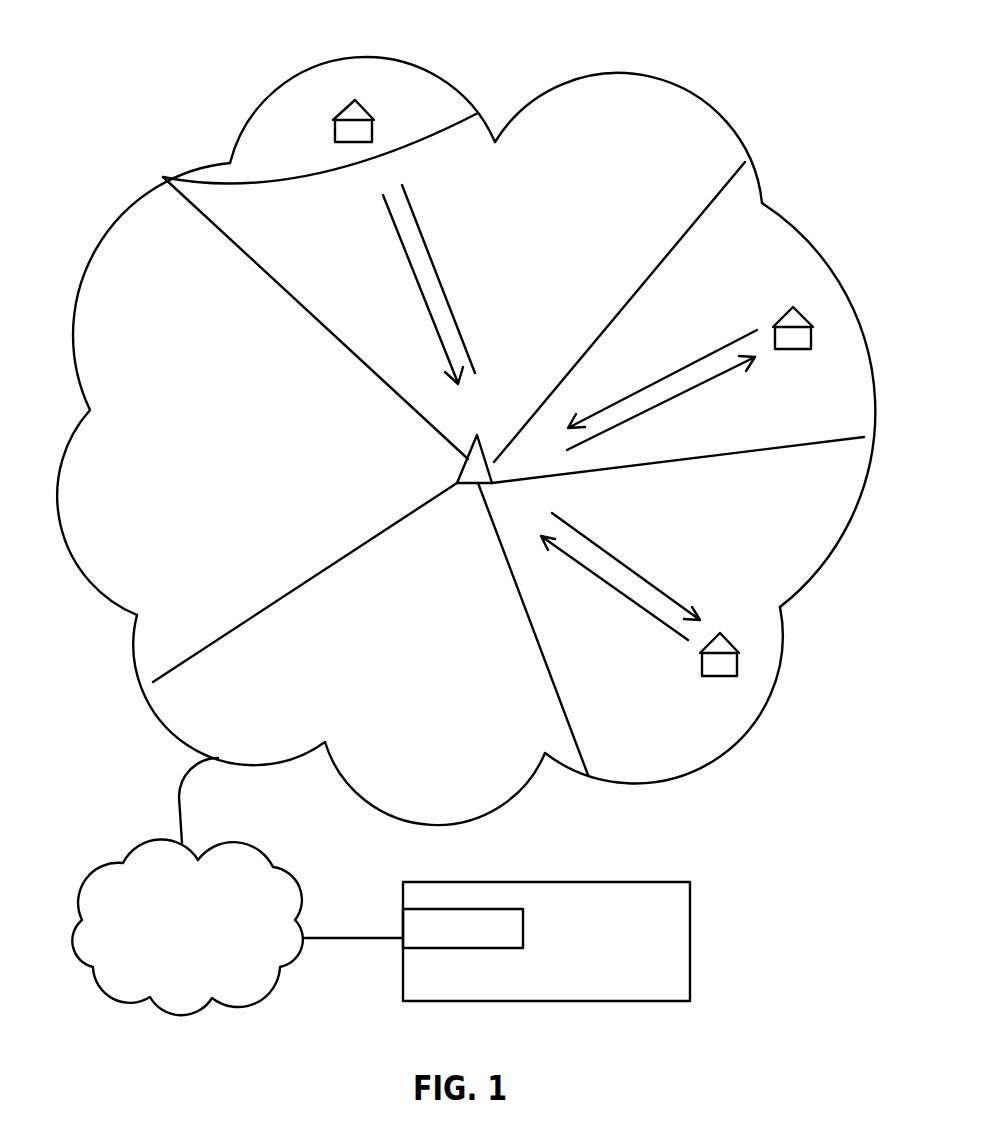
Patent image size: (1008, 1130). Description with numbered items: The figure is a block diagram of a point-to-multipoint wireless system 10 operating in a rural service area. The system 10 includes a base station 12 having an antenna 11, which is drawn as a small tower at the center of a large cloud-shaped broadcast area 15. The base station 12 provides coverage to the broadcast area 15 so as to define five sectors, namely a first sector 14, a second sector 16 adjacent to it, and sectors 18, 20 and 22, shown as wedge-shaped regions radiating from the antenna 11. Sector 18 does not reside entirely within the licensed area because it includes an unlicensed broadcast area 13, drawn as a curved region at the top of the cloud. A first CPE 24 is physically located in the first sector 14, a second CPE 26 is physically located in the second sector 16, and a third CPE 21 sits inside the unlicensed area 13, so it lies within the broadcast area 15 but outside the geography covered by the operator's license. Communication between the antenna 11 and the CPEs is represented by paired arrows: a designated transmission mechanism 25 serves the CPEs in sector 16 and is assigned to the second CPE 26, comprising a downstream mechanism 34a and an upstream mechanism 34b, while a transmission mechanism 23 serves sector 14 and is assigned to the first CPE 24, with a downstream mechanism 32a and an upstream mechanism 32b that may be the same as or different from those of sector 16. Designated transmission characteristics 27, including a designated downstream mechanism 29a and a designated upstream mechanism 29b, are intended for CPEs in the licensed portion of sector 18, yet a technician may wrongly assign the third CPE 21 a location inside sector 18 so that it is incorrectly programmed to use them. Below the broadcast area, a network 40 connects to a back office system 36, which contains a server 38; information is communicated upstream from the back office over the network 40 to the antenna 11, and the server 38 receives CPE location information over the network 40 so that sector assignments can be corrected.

The point-to-multipoint wireless system 10 is at (805, 40).
The antenna 11 is at (495, 412).
The base station 12 is at (492, 463).
The unlicensed broadcast area 13 is at (297, 177).
The first sector 14 is at (763, 685).
The broadcast area 15 is at (623, 73).
The second sector 16 is at (823, 237).
The sector 18 is at (522, 108).
The sector 20 is at (73, 290).
The third CPE 21 is at (388, 102).
The sector 22 is at (167, 715).
The transmission mechanism 23 is at (628, 527).
The first CPE 24 is at (729, 638).
The designated transmission mechanism 25 is at (673, 330).
The second CPE 26 is at (800, 316).
The designated transmission characteristics 27 is at (442, 250).
The designated downstream mechanism 29a is at (420, 287).
The designated upstream mechanism 29b is at (460, 333).
The downstream mechanism 32a is at (625, 600).
The upstream mechanism 32b is at (650, 583).
The downstream mechanism 34a is at (622, 400).
The upstream mechanism 34b is at (675, 395).
The back office system 36 is at (582, 880).
The server 38 is at (527, 928).
The network 40 is at (277, 875).